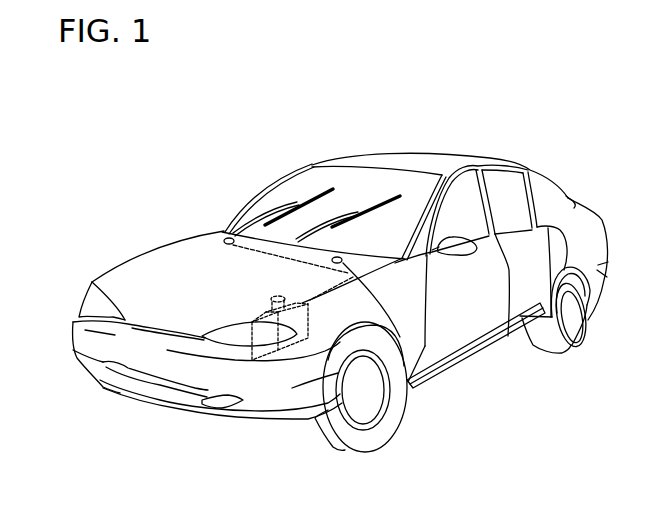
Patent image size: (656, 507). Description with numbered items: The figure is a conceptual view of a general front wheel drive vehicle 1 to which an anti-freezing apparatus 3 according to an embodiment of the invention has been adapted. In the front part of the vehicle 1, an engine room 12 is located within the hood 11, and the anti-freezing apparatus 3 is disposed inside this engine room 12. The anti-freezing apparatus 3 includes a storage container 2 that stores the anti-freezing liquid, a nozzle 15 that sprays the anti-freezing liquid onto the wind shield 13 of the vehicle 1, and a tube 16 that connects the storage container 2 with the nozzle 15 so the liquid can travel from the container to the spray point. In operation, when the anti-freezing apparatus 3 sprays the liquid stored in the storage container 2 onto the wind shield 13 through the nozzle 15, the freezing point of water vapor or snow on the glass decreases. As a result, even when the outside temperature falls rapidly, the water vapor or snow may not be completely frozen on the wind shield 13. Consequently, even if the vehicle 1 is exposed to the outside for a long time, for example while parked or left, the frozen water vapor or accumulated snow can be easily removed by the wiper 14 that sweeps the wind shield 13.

The vehicle 1 is at (440, 147).
The storage container 2 is at (297, 334).
The anti-freezing apparatus 3 is at (488, 390).
The hood 11 is at (160, 259).
The engine room 12 is at (188, 315).
The wind shield 13 is at (312, 177).
The wiper 14 is at (299, 200).
The nozzle 15 is at (422, 350).
The tube 16 is at (413, 368).